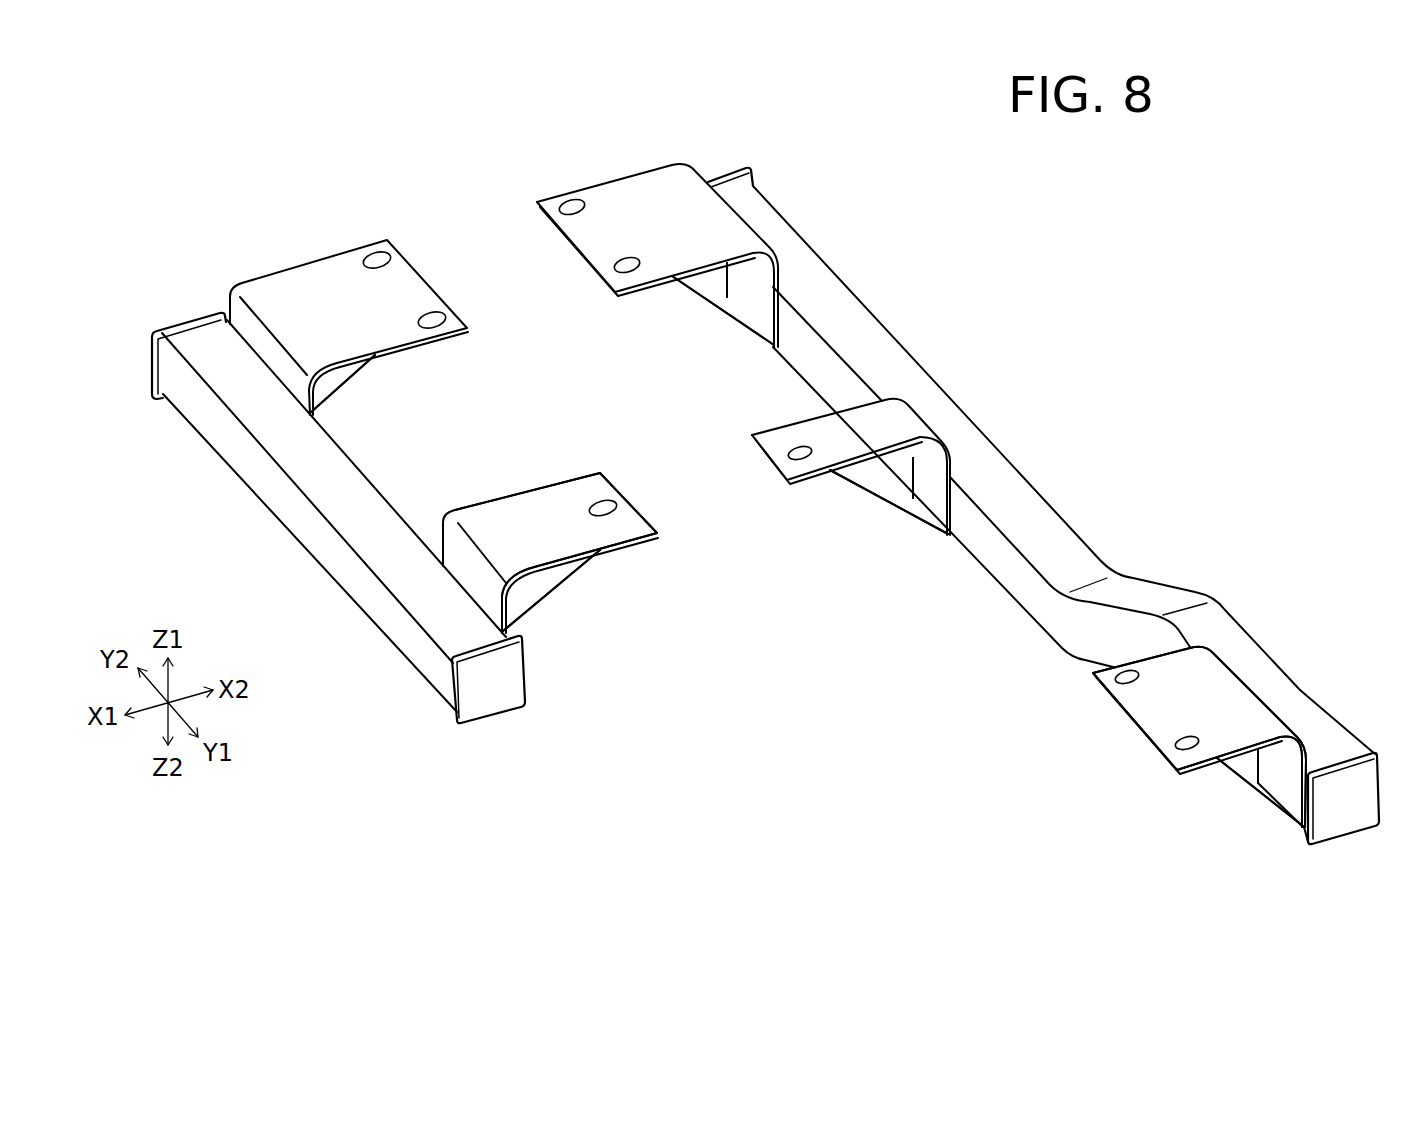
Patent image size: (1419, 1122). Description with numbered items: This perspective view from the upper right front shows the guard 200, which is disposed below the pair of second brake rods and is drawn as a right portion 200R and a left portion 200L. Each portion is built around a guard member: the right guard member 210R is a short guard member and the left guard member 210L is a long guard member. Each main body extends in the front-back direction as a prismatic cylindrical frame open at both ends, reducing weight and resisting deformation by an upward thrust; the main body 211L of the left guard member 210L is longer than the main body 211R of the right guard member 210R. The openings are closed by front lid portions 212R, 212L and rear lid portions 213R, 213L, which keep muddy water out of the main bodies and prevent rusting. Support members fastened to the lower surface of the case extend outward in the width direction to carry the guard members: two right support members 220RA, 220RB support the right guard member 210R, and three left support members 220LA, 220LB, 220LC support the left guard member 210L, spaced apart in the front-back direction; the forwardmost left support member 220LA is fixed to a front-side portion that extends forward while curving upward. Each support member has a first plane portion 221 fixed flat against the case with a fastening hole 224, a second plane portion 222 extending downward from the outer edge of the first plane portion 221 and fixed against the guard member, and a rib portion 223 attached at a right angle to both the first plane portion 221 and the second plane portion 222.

The guard 200 is at (505, 128).
The right support member 200R is at (368, 217).
The left support member 200L is at (553, 177).
The right guard member 210R is at (362, 582).
The left guard member 210L is at (1000, 455).
The main body of the right guard member 211R is at (237, 463).
The main body of the left guard member 211L is at (870, 320).
The right rail end plate 212R is at (488, 702).
The left rail end plate 212L is at (1340, 818).
The right rail end flange 213R is at (188, 322).
The left rail end flange 213L is at (720, 173).
The right support member 220RA is at (523, 512).
The right support member 220RB is at (297, 284).
The forwardmost left support member 220LA is at (1150, 718).
The left support member 220LB is at (790, 432).
The left support member 220LC is at (658, 188).
The first plane portion 221 is at (553, 537).
The second plane portion 222 is at (488, 600).
The rib portion 223 is at (330, 386).
The fastening hole 224 is at (390, 258).